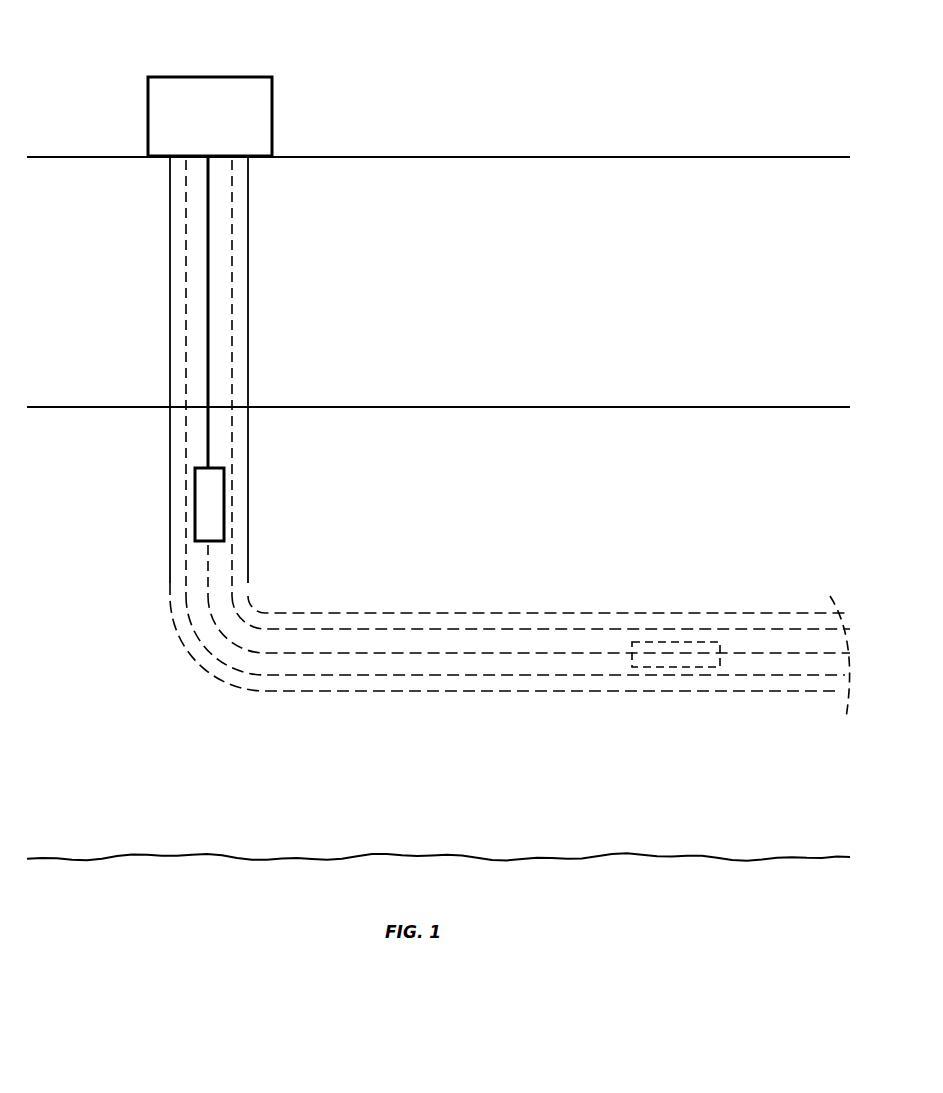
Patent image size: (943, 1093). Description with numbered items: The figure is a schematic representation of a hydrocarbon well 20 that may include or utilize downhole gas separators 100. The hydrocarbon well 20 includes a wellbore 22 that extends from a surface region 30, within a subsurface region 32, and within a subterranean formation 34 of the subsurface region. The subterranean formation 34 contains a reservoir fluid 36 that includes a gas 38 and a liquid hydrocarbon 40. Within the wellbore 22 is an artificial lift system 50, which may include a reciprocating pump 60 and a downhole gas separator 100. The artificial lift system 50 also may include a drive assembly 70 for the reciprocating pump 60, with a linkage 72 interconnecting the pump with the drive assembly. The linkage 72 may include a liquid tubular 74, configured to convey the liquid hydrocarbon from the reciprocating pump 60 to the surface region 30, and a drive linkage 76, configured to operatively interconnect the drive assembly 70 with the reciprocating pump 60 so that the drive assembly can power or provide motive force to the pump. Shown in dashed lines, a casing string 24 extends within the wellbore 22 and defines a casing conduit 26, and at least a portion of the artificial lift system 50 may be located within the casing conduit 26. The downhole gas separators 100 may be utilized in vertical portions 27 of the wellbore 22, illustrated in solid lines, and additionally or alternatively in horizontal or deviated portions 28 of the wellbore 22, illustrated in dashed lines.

The hydrocarbon well 20 is at (131, 40).
The wellbore 22 is at (177, 264).
The casing string 24 is at (185, 321).
The casing conduit 26 is at (196, 352).
The vertical portion of wellbore 27 is at (269, 290).
The horizontal and/or deviated portion of wellbore 28 is at (488, 714).
The surface region 30 is at (519, 79).
The subsurface region 32 is at (519, 280).
The subterranean formation 34 is at (457, 404).
The reservoir fluid 36 is at (515, 436).
The gas 38 is at (571, 430).
The liquid hydrocarbon 40 is at (614, 430).
The artificial lift system 50 is at (144, 103).
The reciprocating pump 60 is at (206, 493).
The drive assembly 70 is at (238, 77).
The linkage 72 is at (214, 338).
The liquid tubular 74 is at (212, 378).
The drive linkage 76 is at (210, 432).
The downhole gas separator 100 is at (206, 517).